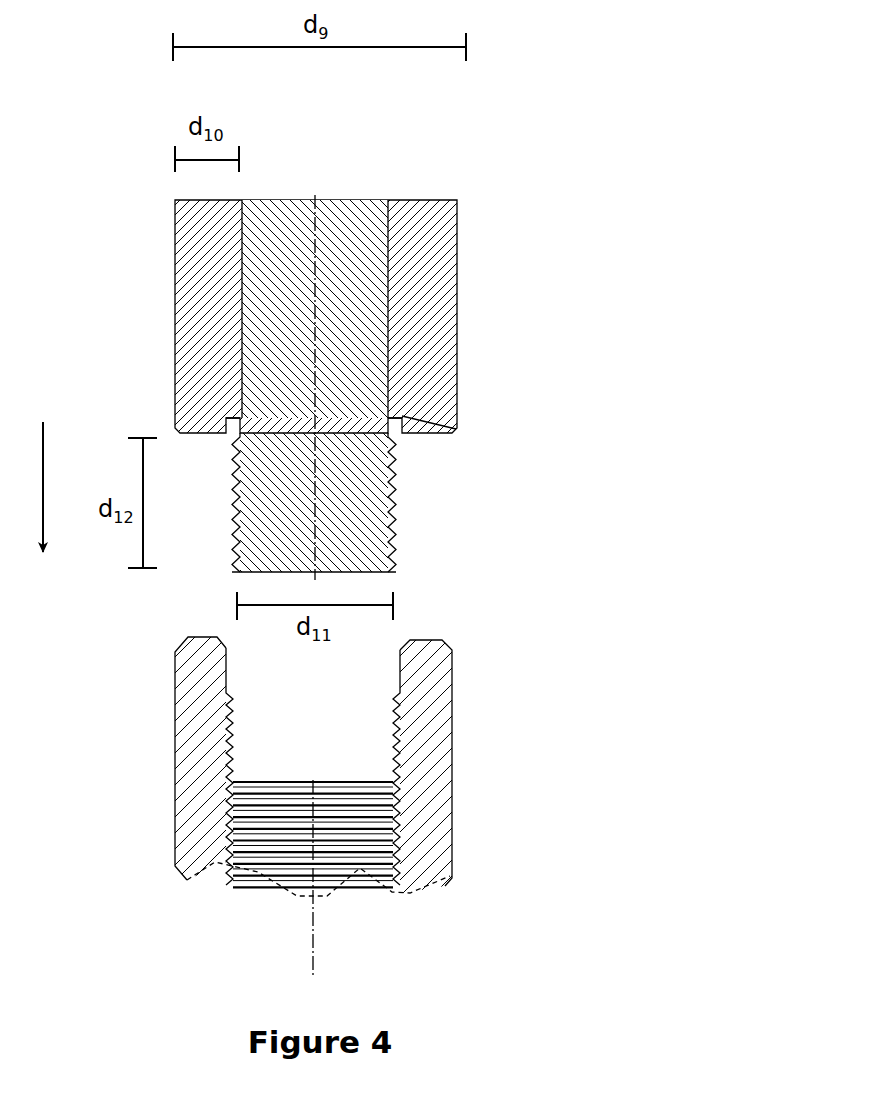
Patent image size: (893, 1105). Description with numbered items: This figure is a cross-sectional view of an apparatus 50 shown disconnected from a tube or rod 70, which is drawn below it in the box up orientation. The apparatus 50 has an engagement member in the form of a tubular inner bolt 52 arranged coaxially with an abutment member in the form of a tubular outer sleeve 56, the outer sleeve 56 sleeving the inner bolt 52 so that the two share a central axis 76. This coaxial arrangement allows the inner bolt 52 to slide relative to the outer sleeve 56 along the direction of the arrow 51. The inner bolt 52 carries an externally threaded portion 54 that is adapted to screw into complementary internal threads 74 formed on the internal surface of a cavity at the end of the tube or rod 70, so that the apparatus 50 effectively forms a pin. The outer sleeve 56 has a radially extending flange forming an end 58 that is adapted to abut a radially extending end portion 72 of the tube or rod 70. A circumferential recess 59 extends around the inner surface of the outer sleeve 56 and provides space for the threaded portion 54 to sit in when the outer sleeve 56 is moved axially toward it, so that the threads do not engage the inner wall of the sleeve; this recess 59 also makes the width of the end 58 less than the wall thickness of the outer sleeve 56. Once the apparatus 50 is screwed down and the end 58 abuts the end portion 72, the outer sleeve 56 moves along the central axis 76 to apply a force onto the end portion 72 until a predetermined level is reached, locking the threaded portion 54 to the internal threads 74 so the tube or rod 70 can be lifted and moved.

The apparatus 50 is at (512, 190).
The arrow 51 is at (42, 468).
The inner bolt 52 is at (282, 238).
The externally threaded portion 54 is at (412, 503).
The outer sleeve 56 is at (472, 259).
The end 58 is at (431, 449).
The circumferential recess 59 is at (398, 418).
The tube or rod 70 is at (152, 790).
The end portion 72 is at (437, 625).
The internal threads 74 is at (380, 743).
The central axis 76 is at (333, 936).